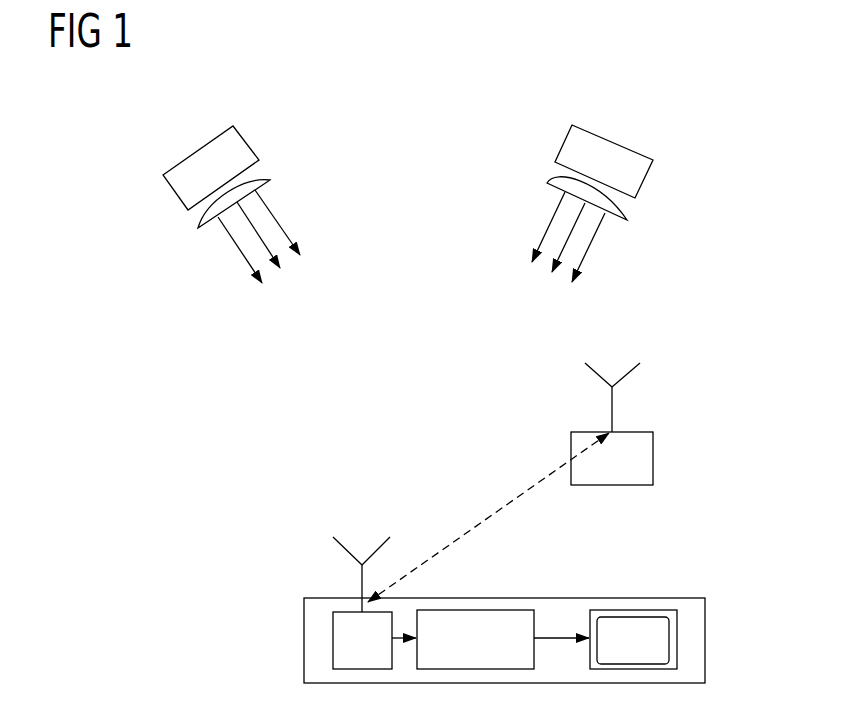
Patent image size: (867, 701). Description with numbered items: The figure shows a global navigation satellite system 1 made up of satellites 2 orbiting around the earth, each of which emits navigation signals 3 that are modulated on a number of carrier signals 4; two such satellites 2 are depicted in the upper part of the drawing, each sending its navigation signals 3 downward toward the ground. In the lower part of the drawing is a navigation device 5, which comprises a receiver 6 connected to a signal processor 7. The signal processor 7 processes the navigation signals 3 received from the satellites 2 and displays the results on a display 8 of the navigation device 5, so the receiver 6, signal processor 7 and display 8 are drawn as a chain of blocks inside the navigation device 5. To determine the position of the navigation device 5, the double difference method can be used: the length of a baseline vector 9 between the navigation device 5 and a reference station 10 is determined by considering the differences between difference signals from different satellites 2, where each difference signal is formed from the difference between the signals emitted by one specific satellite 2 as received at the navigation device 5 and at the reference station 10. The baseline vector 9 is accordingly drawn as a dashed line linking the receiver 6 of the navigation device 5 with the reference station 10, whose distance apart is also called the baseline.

The global navigation satellite system 1 is at (688, 107).
The satellites 2 is at (243, 135).
The navigation signals 3 is at (442, 212).
The carrier signal 4 is at (258, 236).
The navigation device 5 is at (525, 592).
The receiver 6 is at (333, 637).
The signal processor 7 is at (517, 612).
The display 8 is at (648, 610).
The baseline vector 9 is at (502, 512).
The reference station 10 is at (653, 462).